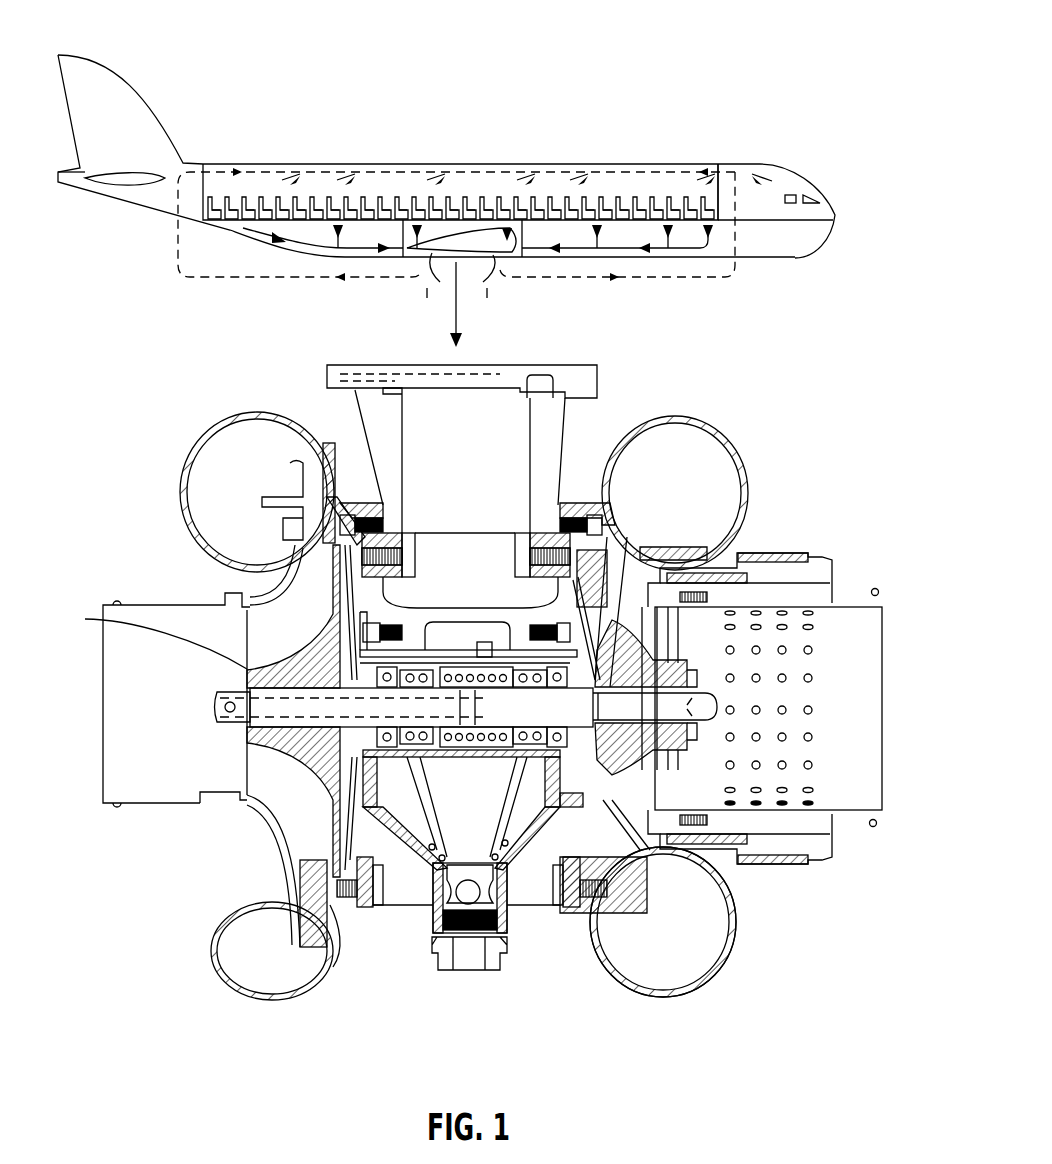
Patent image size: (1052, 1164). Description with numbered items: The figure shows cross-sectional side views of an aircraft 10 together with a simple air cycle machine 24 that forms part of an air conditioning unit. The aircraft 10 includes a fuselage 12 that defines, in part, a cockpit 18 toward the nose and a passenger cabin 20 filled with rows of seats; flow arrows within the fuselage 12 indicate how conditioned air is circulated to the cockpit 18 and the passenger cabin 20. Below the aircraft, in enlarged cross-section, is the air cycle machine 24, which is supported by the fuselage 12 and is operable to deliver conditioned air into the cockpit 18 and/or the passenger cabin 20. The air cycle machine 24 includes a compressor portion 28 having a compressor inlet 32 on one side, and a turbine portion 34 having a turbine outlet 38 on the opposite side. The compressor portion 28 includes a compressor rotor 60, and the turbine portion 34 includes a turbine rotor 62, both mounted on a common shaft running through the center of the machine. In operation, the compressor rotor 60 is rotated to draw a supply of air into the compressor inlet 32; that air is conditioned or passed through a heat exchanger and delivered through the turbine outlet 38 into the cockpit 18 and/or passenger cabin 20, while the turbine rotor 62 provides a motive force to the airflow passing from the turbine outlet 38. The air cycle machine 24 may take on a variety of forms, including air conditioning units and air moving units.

The aircraft 10 is at (692, 44).
The fuselage 12 is at (560, 162).
The cockpit 18 is at (768, 172).
The passenger cabin 20 is at (369, 178).
The air cycle machine 24 is at (757, 997).
The compressor portion 28 is at (160, 581).
The compressor inlet 32 is at (118, 696).
The turbine portion 34 is at (848, 578).
The turbine outlet 38 is at (870, 678).
The compressor rotor 60 is at (149, 636).
The turbine rotor 62 is at (823, 833).